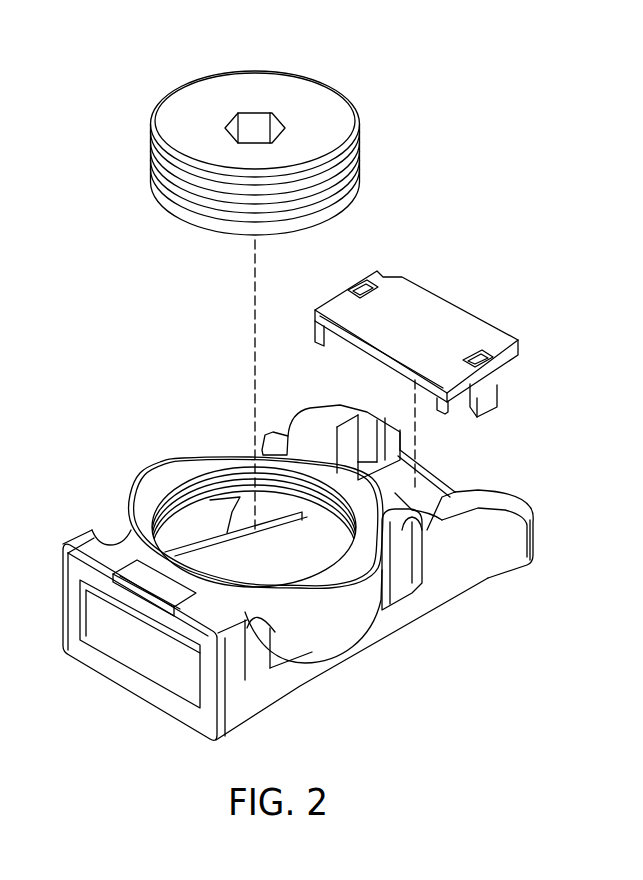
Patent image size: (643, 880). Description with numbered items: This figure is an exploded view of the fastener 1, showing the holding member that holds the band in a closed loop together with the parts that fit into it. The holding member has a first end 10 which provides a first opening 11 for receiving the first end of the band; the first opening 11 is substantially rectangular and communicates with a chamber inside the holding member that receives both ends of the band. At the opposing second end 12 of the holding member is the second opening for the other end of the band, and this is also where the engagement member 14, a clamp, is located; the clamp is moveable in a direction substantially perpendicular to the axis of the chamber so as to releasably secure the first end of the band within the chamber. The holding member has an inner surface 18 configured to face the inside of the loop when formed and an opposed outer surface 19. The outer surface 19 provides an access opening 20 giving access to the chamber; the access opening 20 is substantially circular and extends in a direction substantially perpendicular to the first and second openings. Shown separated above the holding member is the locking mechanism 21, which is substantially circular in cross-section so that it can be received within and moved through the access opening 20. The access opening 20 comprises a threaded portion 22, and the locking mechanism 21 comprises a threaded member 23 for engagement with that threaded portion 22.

The fastener 1 is at (550, 213).
The first end of the holding member 10 is at (203, 729).
The first opening 11 is at (116, 638).
The second end of the holding member 12 is at (535, 550).
The engagement member 14 is at (476, 326).
The inner surface 18 is at (464, 594).
The outer surface 19 is at (145, 514).
The access opening 20 is at (178, 497).
The locking mechanism 21 is at (304, 80).
The threaded portion 22 is at (228, 528).
The threaded member 23 is at (150, 192).